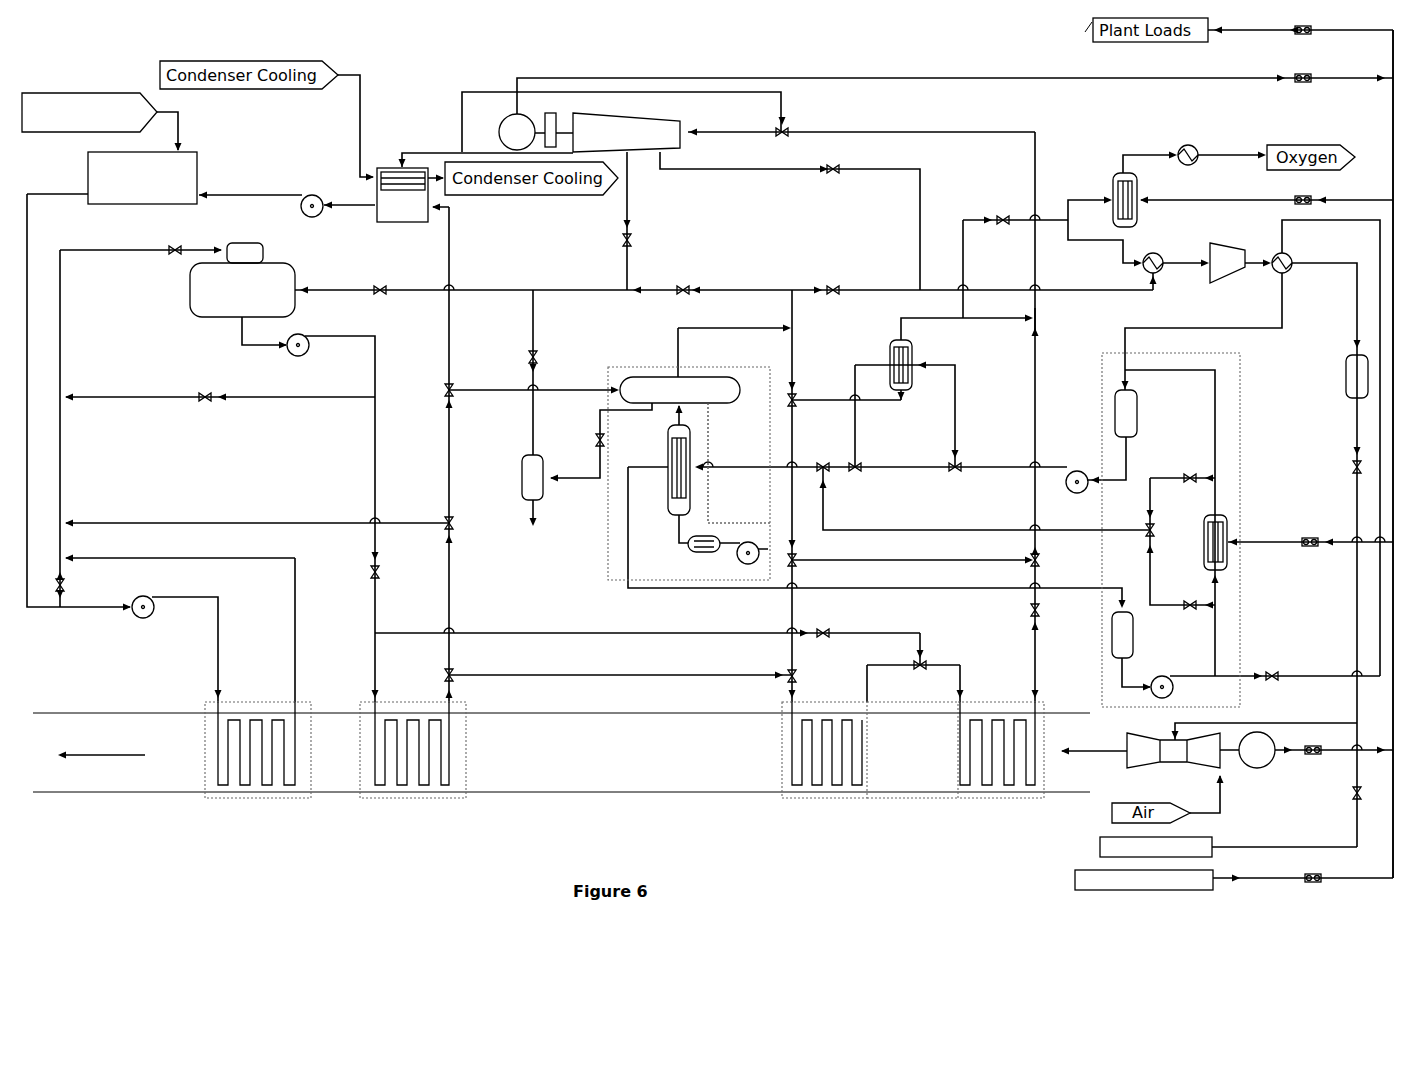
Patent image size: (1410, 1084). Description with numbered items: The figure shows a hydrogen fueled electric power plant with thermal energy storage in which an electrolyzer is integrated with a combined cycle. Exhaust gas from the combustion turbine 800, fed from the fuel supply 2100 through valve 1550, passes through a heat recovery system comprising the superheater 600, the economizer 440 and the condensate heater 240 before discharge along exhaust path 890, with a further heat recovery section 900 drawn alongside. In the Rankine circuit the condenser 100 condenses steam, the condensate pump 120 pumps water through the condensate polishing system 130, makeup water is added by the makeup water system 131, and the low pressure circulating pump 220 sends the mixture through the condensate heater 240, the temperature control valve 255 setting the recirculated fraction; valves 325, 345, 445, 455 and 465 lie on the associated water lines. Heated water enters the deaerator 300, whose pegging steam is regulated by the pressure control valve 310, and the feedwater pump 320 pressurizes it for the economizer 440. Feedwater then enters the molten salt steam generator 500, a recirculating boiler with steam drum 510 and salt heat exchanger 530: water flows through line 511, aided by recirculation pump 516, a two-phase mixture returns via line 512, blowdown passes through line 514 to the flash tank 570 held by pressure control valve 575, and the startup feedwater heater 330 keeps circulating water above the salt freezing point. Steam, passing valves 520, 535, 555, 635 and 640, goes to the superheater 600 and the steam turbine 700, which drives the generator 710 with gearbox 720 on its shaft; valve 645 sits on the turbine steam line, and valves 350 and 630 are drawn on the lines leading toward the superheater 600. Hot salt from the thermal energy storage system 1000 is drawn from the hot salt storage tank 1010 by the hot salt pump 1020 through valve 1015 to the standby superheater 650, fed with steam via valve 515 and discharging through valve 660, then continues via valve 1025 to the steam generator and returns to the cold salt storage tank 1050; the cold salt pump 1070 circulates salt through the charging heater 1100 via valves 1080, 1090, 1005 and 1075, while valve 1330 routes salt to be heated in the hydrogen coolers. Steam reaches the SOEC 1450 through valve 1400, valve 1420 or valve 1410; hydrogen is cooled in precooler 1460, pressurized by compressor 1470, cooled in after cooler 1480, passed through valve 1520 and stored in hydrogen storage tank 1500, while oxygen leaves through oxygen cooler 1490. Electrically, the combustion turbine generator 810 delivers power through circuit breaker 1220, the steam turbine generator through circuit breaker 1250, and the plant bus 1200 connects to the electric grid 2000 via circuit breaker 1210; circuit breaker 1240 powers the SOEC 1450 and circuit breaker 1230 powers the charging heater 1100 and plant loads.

The makeup water system 131 is at (42, 93).
The condensate polishing system 130 is at (88, 170).
The condensate pump 120 is at (320, 216).
The condenser 100 is at (405, 222).
The generator 710 is at (505, 118).
The gearbox 720 is at (556, 117).
The steam turbine 700 is at (632, 117).
The steam valve 645 is at (787, 138).
The valve 1410 is at (840, 175).
The valve 1420 is at (997, 214).
The oxygen cooler 1490 is at (1183, 146).
The SOEC 1450 is at (1140, 176).
The circuit breaker 1230 is at (1297, 38).
The circuit breaker 1250 is at (1298, 86).
The circuit breaker 1240 is at (1295, 196).
The precooler 1460 is at (1163, 255).
The after cooler 1480 is at (1291, 255).
The compressor 1470 is at (1230, 282).
The startup feedwater heater 330 is at (170, 256).
The deaerator 300 is at (212, 320).
The pressure control valve 310 is at (386, 297).
The feedwater pump 320 is at (309, 354).
The valve 325 is at (212, 403).
The valve 520 is at (690, 285).
The pressure control valve 575 is at (542, 358).
The valve 465 is at (456, 396).
The valve 445 is at (456, 528).
The blowdown line 514 is at (596, 430).
The return line 512 is at (662, 416).
The steam drum 510 is at (738, 402).
The downcomer line 511 is at (722, 430).
The valve 515 is at (798, 407).
The valve 1400 is at (840, 297).
The standby superheater 650 is at (917, 346).
The valve 660 is at (1041, 324).
The thermal energy storage system 1000 is at (1241, 374).
The hydrogen storage tank 1500 is at (1346, 376).
The hot salt storage tank 1010 is at (1138, 416).
The hot salt pump 1020 is at (1077, 494).
The valve 1025 is at (862, 472).
The valve 1005 is at (829, 474).
The valve 1015 is at (962, 474).
The valve 1080 is at (1188, 484).
The valve 1520 is at (1352, 474).
The valve 1090 is at (1156, 538).
The charging heater 1100 is at (1230, 571).
The flash tank 570 is at (546, 506).
The salt heat exchanger 530 is at (672, 512).
The recirculation pump 516 is at (747, 564).
The molten salt steam generator 500 is at (608, 582).
The valve 535 is at (800, 566).
The valve 635 is at (1042, 566).
The temperature control valve 255 is at (67, 586).
The low pressure circulating pump 220 is at (152, 616).
The valve 345 is at (381, 579).
The valve 640 is at (1041, 616).
The valve 1075 is at (1188, 611).
The cold salt storage tank 1050 is at (1134, 634).
The valve 1330 is at (1279, 672).
The cold salt pump 1070 is at (1174, 694).
The valve 350 is at (824, 640).
The valve 555 is at (800, 682).
The valve 455 is at (456, 682).
The valve 630 is at (918, 672).
The generator 810 is at (1070, 757).
The combustion turbine 800 is at (1178, 770).
The circuit breaker 1220 is at (1308, 757).
The valve 1550 is at (1352, 800).
The fuel supply 2100 is at (1098, 848).
The electric grid 2000 is at (1125, 892).
The circuit breaker 1210 is at (1306, 888).
The electrical bus 1200 is at (1380, 880).
The exhaust flow 890 is at (82, 760).
The condensate heater 240 is at (250, 800).
The economizer 440 is at (402, 800).
The heat exchanger coil 900 is at (752, 800).
The superheater 600 is at (912, 800).